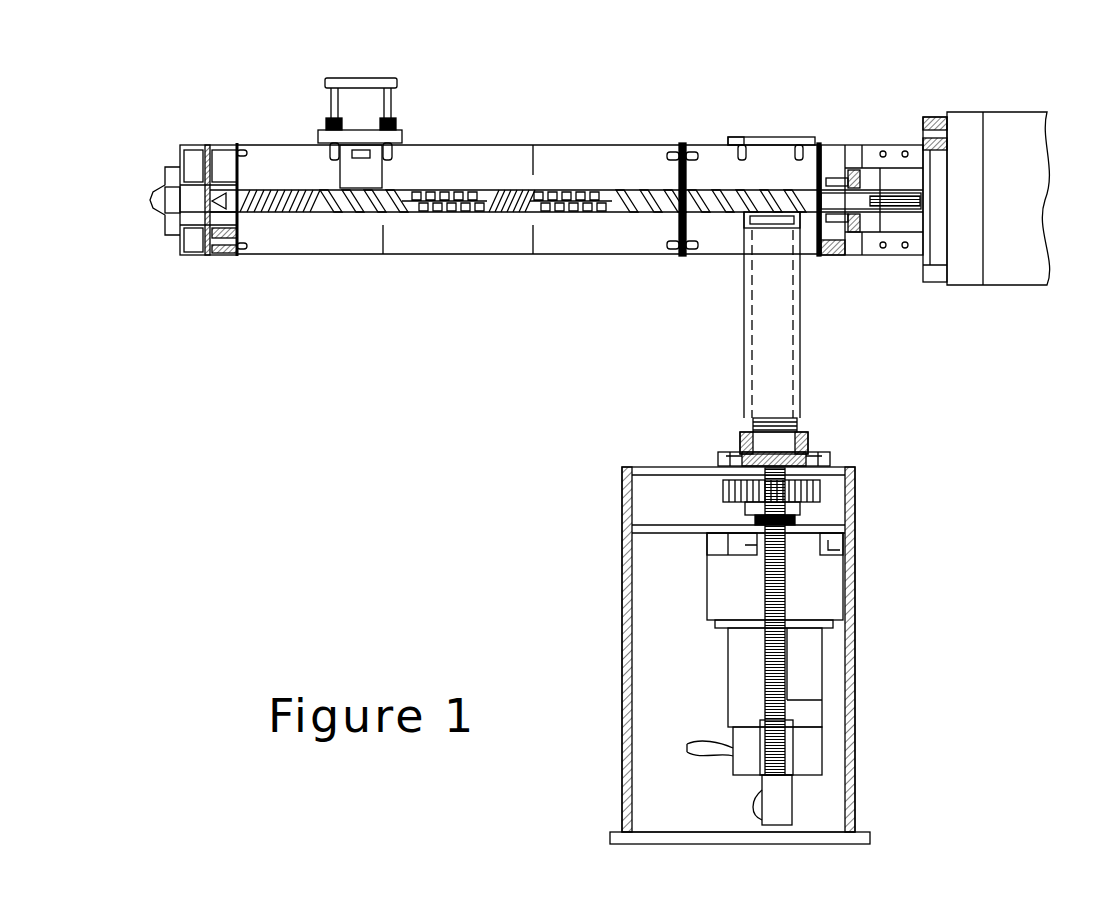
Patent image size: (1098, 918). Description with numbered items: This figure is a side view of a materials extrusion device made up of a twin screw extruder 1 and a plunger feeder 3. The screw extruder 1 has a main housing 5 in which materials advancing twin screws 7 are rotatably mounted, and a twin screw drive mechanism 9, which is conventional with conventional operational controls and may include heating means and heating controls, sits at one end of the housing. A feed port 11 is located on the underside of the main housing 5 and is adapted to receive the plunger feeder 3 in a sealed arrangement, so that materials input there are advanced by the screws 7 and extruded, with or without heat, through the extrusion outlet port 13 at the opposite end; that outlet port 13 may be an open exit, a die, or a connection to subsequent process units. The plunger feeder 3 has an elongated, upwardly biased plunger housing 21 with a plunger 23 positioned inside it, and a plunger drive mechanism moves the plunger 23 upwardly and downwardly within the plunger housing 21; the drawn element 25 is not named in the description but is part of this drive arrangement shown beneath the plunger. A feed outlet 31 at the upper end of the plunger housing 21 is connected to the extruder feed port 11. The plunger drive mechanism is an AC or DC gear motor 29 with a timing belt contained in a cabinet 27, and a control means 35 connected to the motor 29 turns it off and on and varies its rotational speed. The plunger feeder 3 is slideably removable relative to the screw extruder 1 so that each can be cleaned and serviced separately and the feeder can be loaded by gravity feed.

The twin screw extruder 1 is at (468, 280).
The plunger feeder 3 is at (880, 580).
The main housing 5 is at (320, 257).
The materials advancing twin screw 7 is at (457, 190).
The twin screw drive mechanism 9 is at (970, 272).
The feed port 11 is at (695, 208).
The extrusion outlet port 13 is at (153, 212).
The plunger housing 21 is at (800, 370).
The plunger 23 is at (772, 418).
The lead screw 25 is at (787, 630).
The cabinet 27 is at (858, 767).
The gear motor 29 is at (743, 673).
The feed outlet 31 is at (797, 265).
The control means 35 is at (810, 550).